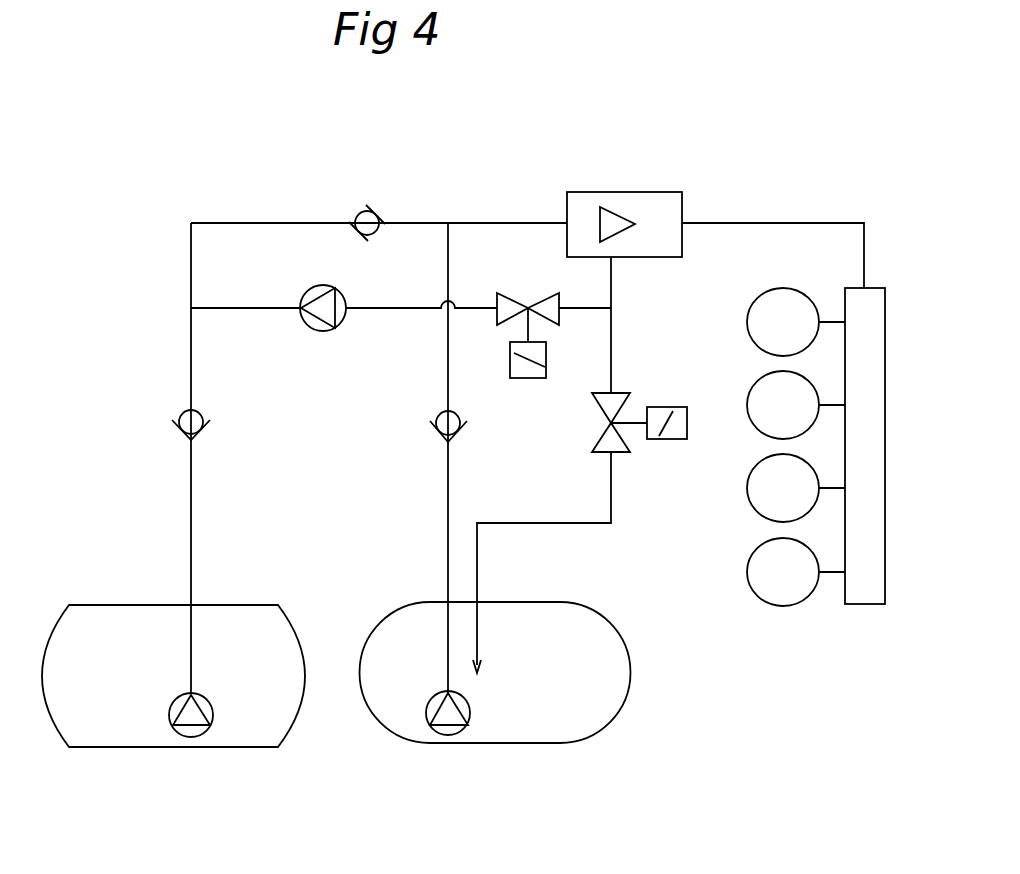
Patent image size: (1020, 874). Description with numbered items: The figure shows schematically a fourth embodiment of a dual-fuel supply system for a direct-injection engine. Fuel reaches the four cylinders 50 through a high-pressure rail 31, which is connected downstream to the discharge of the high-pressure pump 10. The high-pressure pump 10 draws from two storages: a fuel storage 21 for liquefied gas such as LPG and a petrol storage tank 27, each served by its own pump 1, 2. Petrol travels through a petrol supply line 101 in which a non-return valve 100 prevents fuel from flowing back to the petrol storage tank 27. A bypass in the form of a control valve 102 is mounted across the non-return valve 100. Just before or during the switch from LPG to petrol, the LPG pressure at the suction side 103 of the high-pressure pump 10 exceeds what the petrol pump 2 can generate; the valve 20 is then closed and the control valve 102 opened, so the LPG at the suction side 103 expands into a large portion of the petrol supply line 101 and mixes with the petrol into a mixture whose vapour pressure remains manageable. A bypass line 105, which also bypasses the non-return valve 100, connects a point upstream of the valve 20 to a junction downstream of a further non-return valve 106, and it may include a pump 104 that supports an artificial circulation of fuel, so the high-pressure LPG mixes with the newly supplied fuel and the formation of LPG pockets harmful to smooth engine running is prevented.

The pump 1 is at (500, 717).
The petrol pump 2 is at (133, 715).
The high-pressure pump 10 is at (652, 208).
The valve 20 is at (671, 452).
The fuel storage 21 is at (417, 617).
The petrol storage tank 27 is at (227, 617).
The high-pressure rail 31 is at (876, 622).
The cylinders 50 is at (757, 398).
The non-return valve 100 is at (368, 212).
The petrol supply line 101 is at (191, 335).
The control valve 102 is at (525, 370).
The suction side 103 is at (483, 222).
The pump 104 is at (317, 327).
The bypass line 105 is at (385, 308).
The non-return valve 106 is at (185, 420).